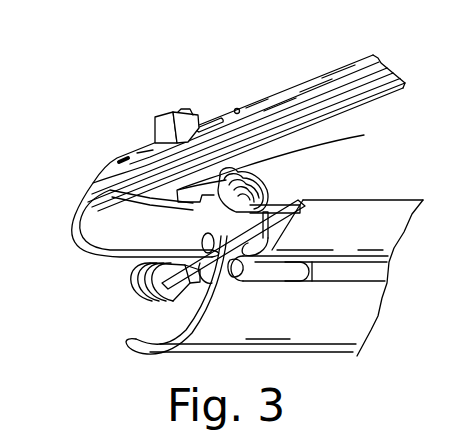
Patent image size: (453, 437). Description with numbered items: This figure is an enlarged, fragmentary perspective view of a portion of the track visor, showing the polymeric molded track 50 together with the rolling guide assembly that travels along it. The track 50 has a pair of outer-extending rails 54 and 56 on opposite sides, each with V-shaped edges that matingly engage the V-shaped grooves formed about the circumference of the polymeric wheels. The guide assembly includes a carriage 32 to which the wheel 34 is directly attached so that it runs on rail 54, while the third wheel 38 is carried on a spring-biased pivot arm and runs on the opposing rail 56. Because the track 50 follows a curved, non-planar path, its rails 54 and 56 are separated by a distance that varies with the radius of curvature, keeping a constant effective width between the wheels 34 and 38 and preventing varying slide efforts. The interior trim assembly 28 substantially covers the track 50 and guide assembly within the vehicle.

The interior trim assembly 28 is at (356, 355).
The carriage 32 is at (178, 301).
The wheel 34 is at (130, 291).
The third wheel 38 is at (253, 182).
The track 50 is at (333, 73).
The rail 54 is at (97, 261).
The rail 56 is at (287, 161).